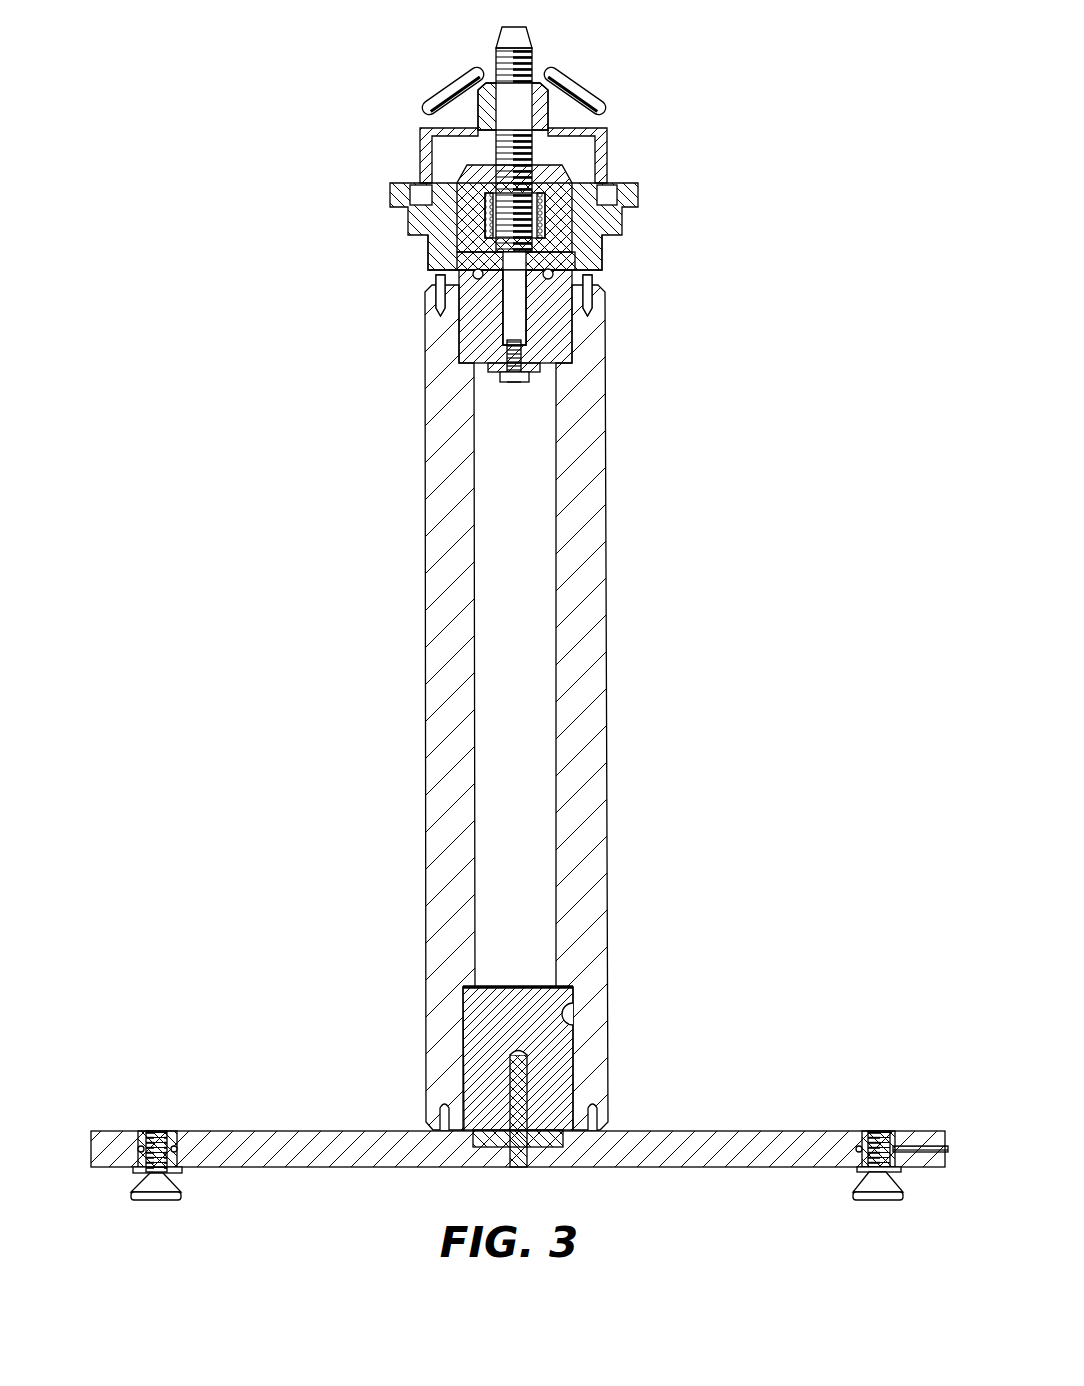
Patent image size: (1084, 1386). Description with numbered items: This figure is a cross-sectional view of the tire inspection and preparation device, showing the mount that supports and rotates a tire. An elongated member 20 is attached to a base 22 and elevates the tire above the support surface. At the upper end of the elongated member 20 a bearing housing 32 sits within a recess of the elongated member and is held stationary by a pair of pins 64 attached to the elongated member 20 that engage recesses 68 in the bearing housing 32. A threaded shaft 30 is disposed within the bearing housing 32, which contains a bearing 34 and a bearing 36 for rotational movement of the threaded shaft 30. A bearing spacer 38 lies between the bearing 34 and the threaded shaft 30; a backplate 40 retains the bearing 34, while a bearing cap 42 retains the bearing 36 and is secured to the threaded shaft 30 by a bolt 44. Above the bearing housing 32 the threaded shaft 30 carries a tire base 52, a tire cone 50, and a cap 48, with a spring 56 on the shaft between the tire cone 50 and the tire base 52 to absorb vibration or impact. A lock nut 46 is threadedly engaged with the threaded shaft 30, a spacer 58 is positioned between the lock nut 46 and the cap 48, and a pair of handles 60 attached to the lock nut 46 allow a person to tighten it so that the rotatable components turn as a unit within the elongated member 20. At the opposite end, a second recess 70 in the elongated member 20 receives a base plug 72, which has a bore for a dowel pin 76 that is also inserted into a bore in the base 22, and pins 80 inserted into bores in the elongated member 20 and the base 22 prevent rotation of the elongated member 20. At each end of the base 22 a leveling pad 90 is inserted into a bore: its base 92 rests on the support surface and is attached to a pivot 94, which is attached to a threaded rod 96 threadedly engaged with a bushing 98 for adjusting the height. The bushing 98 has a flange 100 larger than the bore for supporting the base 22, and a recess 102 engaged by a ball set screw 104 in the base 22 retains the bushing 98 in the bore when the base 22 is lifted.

The elongated member 20 is at (608, 630).
The base 22 is at (305, 1131).
The threaded shaft 30 is at (533, 54).
The bearing housing 32 is at (573, 331).
The bearing 34 is at (602, 256).
The bearing 36 is at (527, 357).
The bearing spacer 38 is at (488, 280).
The backplate 40 is at (463, 258).
The bearing cap 42 is at (542, 373).
The bolt 44 is at (514, 383).
The lock nut 46 is at (548, 118).
The cap 48 is at (607, 162).
The tire cone 50 is at (567, 168).
The tire base 52 is at (622, 212).
The spring 56 is at (487, 213).
The spacer 58 is at (478, 125).
The handles 60 is at (584, 66).
The pins 64 is at (437, 302).
The recesses 68 is at (452, 279).
The second recess 70 is at (573, 1036).
The base plug 72 is at (518, 990).
The dowel pin 76 is at (520, 1078).
The pins 80 is at (597, 1112).
The leveling pad 90 is at (183, 1148).
The base 92 is at (160, 1203).
The pivot 94 is at (167, 1176).
The threaded rod 96 is at (155, 1133).
The bushing 98 is at (138, 1158).
The flange 100 is at (138, 1168).
The recess 102 is at (176, 1150).
The ball set screw 104 is at (920, 1146).